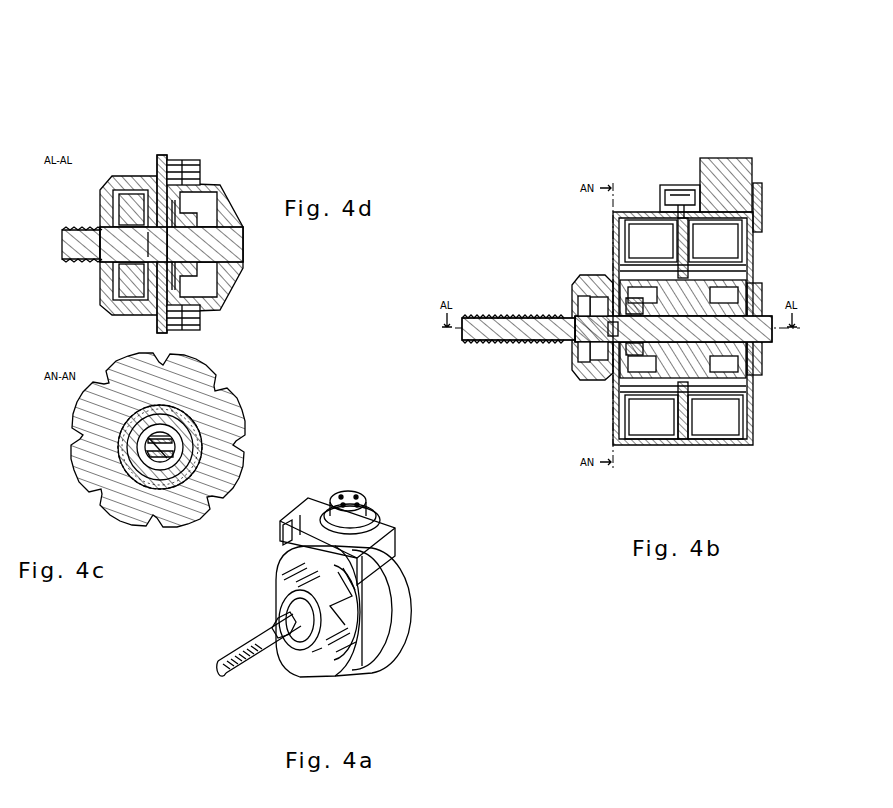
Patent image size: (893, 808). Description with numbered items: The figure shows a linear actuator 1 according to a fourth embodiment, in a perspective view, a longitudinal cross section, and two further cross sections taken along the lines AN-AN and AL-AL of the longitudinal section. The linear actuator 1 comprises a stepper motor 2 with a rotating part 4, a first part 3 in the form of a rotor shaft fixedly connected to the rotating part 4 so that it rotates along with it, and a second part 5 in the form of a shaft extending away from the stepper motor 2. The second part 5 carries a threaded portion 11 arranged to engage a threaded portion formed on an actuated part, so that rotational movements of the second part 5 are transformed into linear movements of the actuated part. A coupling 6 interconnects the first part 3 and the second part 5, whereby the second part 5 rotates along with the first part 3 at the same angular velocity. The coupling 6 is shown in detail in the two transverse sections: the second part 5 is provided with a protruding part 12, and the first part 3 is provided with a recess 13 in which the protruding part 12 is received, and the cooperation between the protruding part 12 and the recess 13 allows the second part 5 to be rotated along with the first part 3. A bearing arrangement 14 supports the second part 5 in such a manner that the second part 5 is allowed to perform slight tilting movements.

In FIG. 4B, the linear actuator 1 is at (730, 117).
In FIG. 4A, the linear actuator 1 is at (347, 615).
In FIG. 4B, the stepper motor 2 is at (718, 420).
In FIG. 4A, the stepper motor 2 is at (402, 607).
In FIG. 4D, the first part 3 is at (205, 248).
In FIG. 4C, the first part 3 is at (158, 463).
In FIG. 4B, the first part 3 is at (730, 330).
In FIG. 4B, the rotating part 4 is at (677, 367).
In FIG. 4D, the second part 5 is at (112, 240).
In FIG. 4B, the second part 5 is at (568, 332).
In FIG. 4A, the second part 5 is at (282, 635).
In FIG. 4D, the coupling 6 is at (220, 162).
In FIG. 4C, the coupling 6 is at (230, 385).
In FIG. 4B, the coupling 6 is at (623, 335).
In FIG. 4A, the coupling 6 is at (308, 647).
In FIG. 4D, the threaded portion 11 is at (83, 260).
In FIG. 4B, the threaded portion 11 is at (493, 315).
In FIG. 4A, the threaded portion 11 is at (245, 662).
In FIG. 4C, the protruding part 12 is at (170, 445).
In FIG. 4B, the protruding part 12 is at (622, 317).
In FIG. 4C, the recess 13 is at (163, 462).
In FIG. 4B, the recess 13 is at (615, 357).
In FIG. 4D, the bearing arrangement 14 is at (127, 203).
In FIG. 4B, the bearing arrangement 14 is at (588, 298).